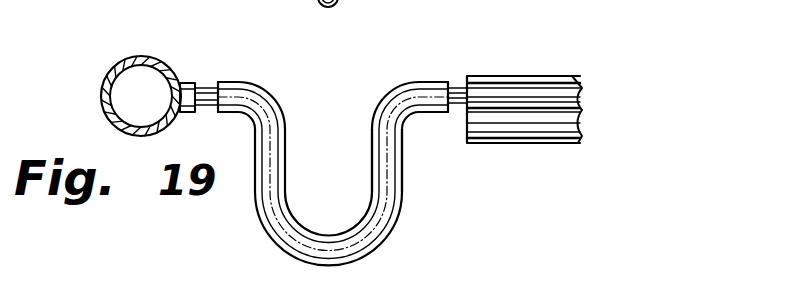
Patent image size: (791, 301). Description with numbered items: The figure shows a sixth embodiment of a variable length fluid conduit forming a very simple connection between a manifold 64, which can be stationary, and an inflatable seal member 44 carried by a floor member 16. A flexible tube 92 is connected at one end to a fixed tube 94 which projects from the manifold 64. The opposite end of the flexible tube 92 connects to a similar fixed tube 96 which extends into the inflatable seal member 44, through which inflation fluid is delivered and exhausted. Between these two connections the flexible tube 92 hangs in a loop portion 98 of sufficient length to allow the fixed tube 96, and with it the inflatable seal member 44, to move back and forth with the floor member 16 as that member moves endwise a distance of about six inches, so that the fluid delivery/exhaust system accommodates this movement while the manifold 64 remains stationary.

The manifold 64 is at (109, 72).
The fixed tube 94 is at (204, 91).
The flexible tube 92 is at (273, 147).
The loop portion 98 is at (405, 195).
The fixed tube 96 is at (457, 86).
The floor member 16 is at (527, 75).
The inflatable seal member 44 is at (581, 88).